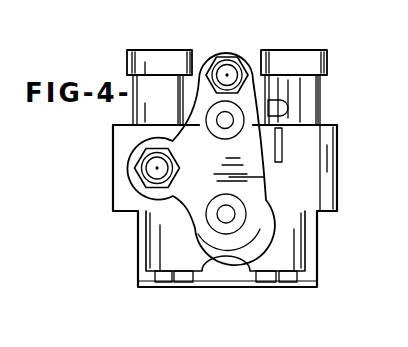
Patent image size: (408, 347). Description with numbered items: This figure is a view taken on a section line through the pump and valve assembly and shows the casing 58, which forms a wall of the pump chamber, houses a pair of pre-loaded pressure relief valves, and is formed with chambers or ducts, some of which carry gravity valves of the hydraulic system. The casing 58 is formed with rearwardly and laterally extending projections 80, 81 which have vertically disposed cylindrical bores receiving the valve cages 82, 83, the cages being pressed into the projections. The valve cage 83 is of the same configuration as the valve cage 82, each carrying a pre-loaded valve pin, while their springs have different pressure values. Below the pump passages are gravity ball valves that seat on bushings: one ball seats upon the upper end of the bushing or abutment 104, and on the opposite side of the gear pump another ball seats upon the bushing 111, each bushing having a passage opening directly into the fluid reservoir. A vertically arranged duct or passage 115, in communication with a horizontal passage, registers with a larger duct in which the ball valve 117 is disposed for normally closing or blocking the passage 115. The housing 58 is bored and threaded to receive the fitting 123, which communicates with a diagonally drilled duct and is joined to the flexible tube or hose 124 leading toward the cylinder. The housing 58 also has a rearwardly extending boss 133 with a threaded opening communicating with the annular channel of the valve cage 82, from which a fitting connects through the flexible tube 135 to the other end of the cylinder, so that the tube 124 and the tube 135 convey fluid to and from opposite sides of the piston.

The casing 58 is at (306, 232).
The rearwardly and laterally extending projection 80 is at (128, 168).
The rearwardly and laterally extending projection 81 is at (337, 162).
The valve cage 82 is at (132, 113).
The valve cage 83 is at (320, 95).
The bushing or abutment 104 is at (157, 284).
The bushing 111 is at (264, 281).
The vertically arranged duct or passage 115 is at (283, 136).
The ball valve 117 is at (284, 100).
The fitting 123 is at (228, 42).
The flexible tube or hose 124 is at (244, 56).
The rearwardly extending boss 133 is at (140, 152).
The flexible tube 135 is at (143, 178).